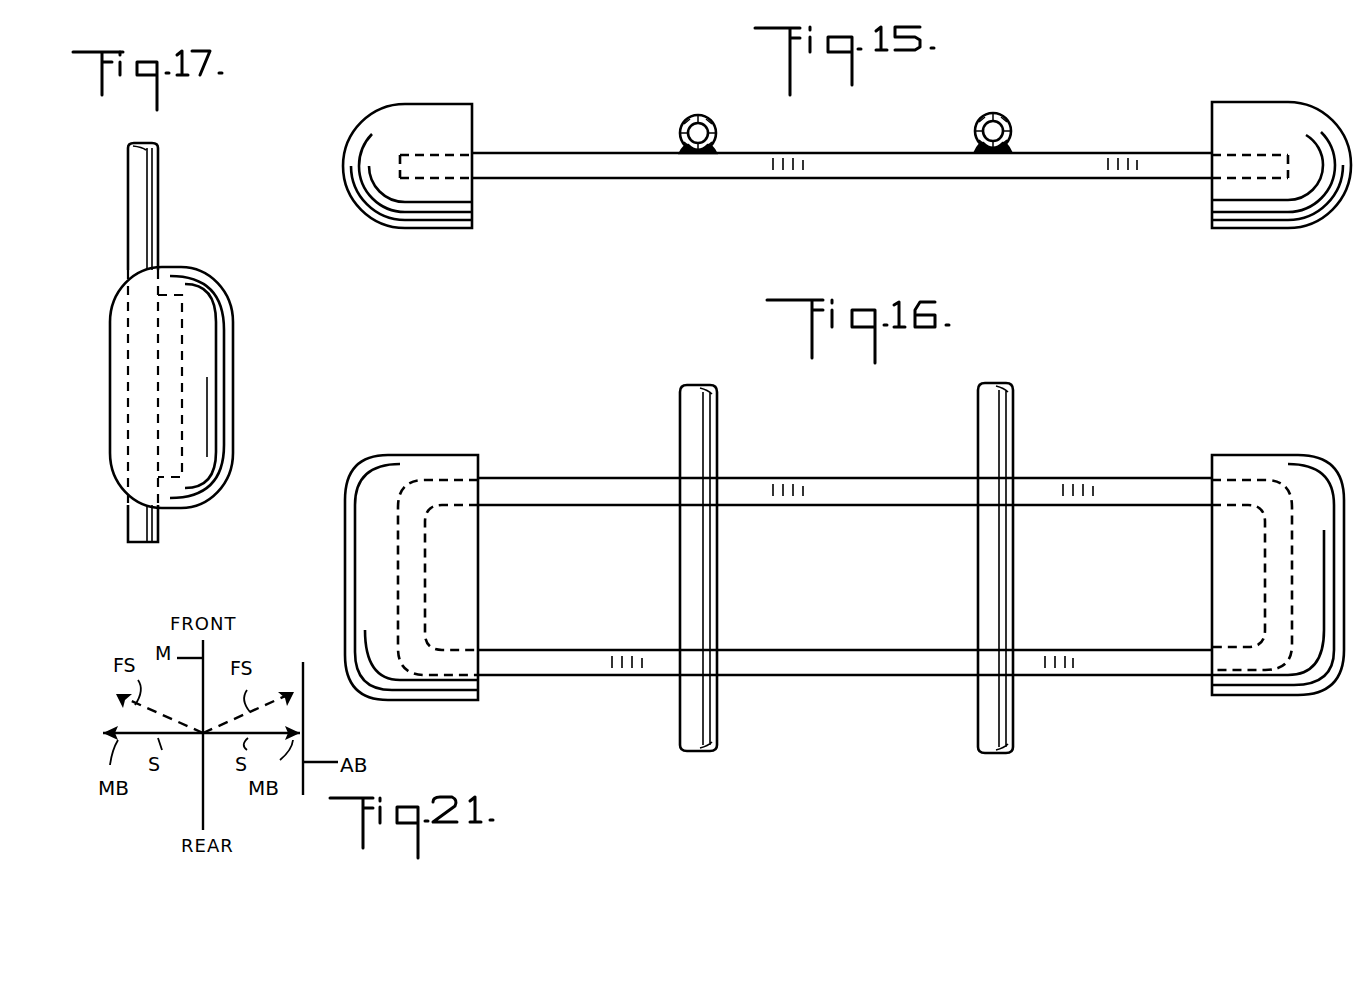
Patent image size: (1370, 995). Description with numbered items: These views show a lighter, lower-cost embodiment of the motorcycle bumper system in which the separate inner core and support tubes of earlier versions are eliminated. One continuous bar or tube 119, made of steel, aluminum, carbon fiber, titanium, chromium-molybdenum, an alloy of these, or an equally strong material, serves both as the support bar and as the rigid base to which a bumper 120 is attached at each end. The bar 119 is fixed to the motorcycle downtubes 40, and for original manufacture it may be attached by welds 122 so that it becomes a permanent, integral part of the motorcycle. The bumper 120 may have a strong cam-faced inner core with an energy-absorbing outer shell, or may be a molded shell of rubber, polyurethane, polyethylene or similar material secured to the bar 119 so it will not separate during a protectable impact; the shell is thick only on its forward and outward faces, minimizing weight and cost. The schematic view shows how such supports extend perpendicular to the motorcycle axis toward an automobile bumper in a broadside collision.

In FIG. 15, the downtube 40 is at (681, 123).
In FIG. 16, the downtube 40 is at (717, 420).
In FIG. 17, the downtube 40 is at (150, 193).
In FIG. 15, the continuous bar or tube 119 is at (820, 178).
In FIG. 16, the continuous bar or tube 119 is at (871, 484).
In FIG. 17, the continuous bar or tube 119 is at (182, 325).
In FIG. 15, the bumper 120 is at (378, 108).
In FIG. 16, the bumper 120 is at (453, 455).
In FIG. 17, the bumper 120 is at (235, 382).
In FIG. 15, the weld 122 is at (717, 148).